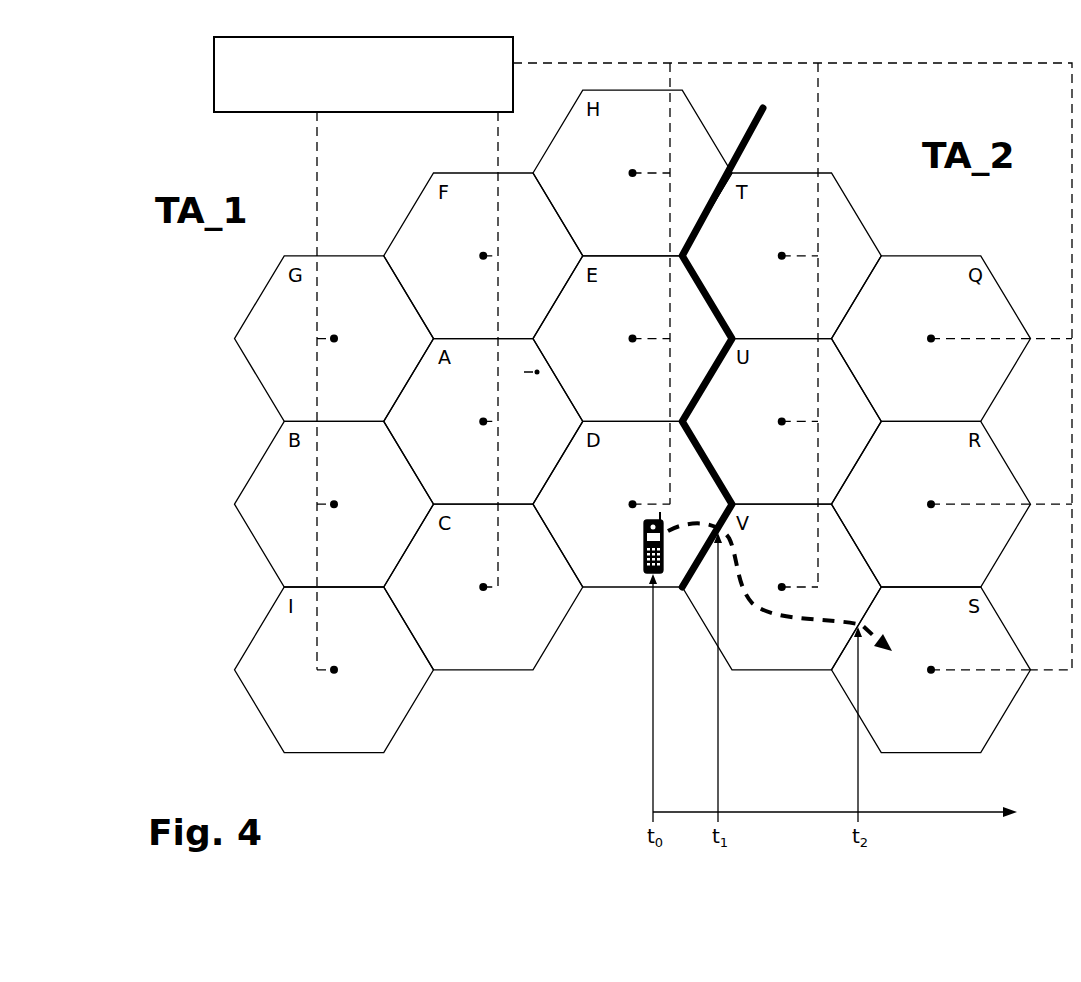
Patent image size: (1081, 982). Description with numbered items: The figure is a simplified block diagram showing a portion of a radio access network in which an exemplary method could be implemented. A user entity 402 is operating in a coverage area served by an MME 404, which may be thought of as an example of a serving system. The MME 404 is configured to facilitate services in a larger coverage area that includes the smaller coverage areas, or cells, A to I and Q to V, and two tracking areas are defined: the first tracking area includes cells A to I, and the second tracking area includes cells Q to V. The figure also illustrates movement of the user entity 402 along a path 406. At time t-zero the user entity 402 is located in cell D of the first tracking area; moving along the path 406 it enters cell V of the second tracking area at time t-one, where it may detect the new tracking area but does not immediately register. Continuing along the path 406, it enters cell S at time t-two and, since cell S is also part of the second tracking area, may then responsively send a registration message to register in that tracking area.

The user entity 402 is at (644, 553).
The MME 404 is at (363, 74).
The path 406 is at (780, 587).